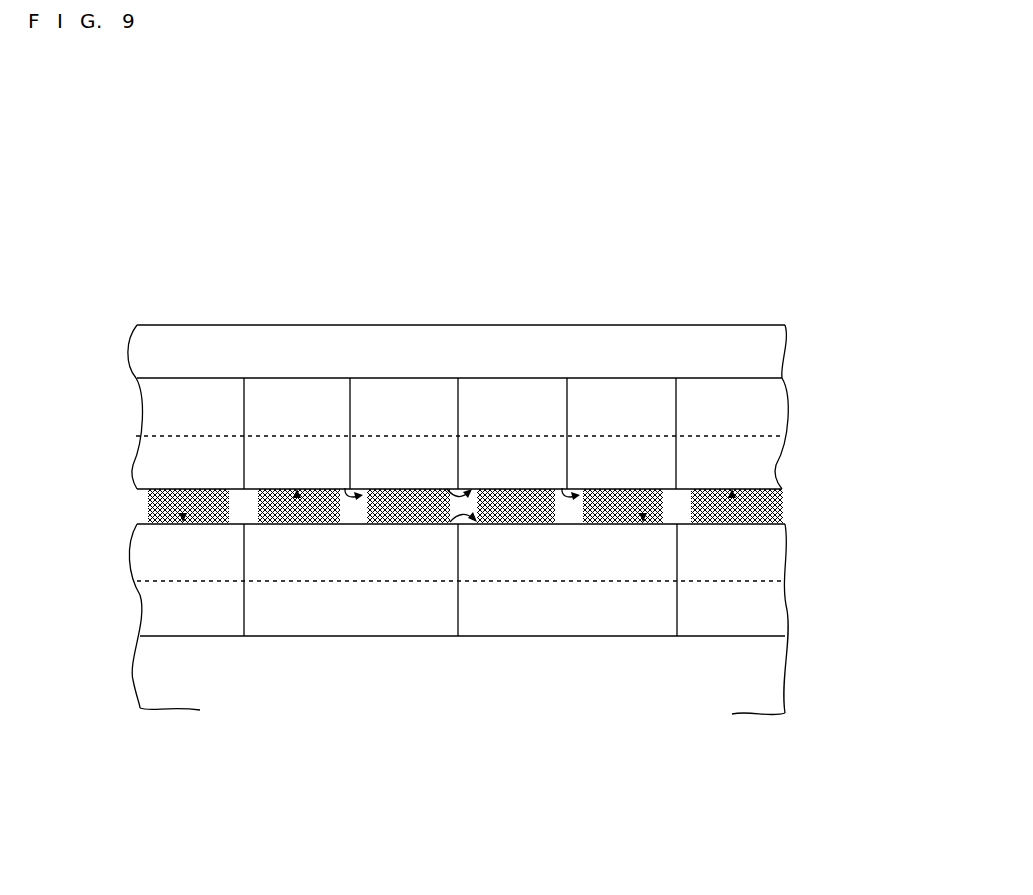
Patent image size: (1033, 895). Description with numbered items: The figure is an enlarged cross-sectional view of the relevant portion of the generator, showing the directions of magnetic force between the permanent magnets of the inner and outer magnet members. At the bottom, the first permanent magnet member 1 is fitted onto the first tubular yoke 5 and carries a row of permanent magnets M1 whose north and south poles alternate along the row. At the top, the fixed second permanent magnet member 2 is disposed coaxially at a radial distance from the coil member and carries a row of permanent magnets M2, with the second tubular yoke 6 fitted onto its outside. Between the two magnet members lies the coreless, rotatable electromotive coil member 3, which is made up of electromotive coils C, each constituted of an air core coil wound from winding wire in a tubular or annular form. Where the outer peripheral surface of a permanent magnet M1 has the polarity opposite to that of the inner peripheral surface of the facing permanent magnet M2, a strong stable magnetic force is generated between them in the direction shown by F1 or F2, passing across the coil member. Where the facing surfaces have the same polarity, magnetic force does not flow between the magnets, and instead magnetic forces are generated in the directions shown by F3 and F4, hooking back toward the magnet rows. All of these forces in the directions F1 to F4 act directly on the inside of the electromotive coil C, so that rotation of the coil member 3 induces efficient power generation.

The first permanent magnet member 1 is at (448, 657).
The second permanent magnet member 2 is at (448, 372).
The electromotive coil member 3 is at (448, 508).
The first tubular yoke 5 is at (752, 683).
The second tubular yoke 6 is at (741, 330).
The permanent magnet M1 is at (152, 597).
The permanent magnet M2 is at (137, 463).
The electromotive coil C is at (770, 506).
The magnetic force direction F1 is at (297, 494).
The magnetic force direction F2 is at (183, 516).
The magnetic force direction F3 is at (458, 524).
The magnetic force direction F4 is at (345, 488).